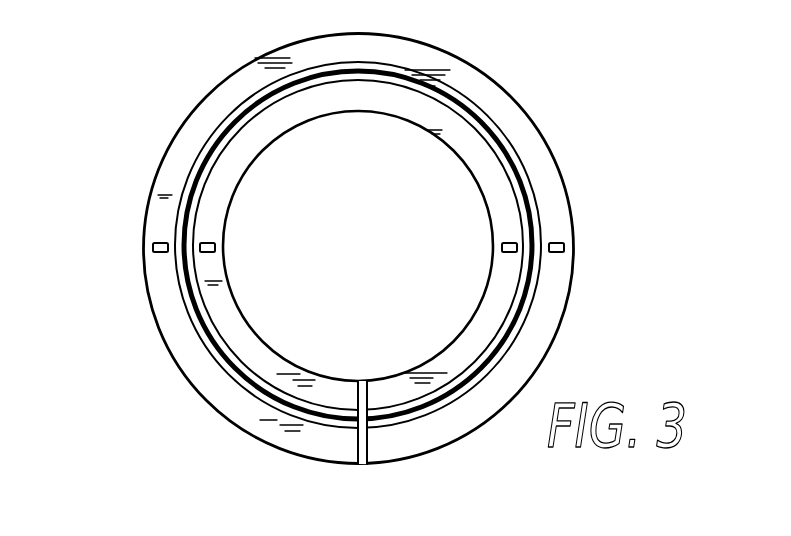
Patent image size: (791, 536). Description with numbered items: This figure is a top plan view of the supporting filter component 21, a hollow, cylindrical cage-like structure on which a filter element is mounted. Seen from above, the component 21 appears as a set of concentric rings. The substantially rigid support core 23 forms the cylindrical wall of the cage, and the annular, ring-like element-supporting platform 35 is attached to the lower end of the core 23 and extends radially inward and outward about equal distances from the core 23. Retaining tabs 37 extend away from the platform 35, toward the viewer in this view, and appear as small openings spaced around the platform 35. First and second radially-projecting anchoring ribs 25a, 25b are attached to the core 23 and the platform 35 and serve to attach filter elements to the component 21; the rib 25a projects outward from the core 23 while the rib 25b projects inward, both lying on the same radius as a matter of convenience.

The supporting filter component 21 is at (353, 273).
The support core 23 is at (245, 100).
The first radially-projecting anchoring rib 25a is at (358, 452).
The second radially-projecting anchoring rib 25b is at (357, 400).
The element-supporting platform 35 is at (488, 288).
The retaining tabs 37 is at (510, 243).